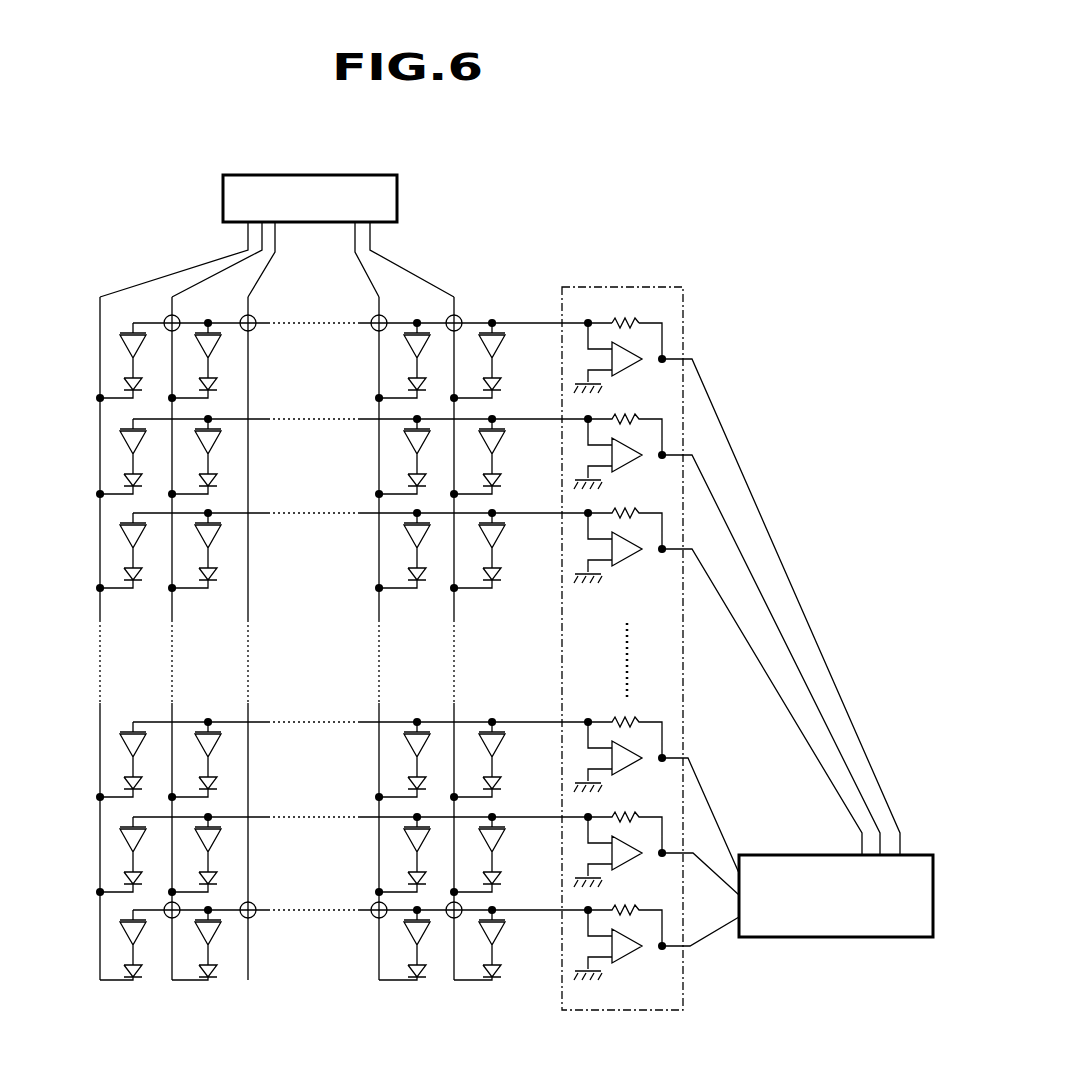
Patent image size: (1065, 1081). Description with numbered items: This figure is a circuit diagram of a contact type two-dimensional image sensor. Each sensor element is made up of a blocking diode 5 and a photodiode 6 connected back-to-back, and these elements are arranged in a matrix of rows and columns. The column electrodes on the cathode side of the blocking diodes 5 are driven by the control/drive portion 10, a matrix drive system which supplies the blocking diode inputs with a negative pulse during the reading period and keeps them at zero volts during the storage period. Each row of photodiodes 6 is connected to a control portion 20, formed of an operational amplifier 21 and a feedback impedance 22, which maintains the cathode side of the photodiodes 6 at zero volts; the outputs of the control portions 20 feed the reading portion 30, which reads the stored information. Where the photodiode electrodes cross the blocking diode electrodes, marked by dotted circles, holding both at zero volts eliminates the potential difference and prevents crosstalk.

The control/drive portion 10 is at (344, 184).
The blocking diode 5 is at (125, 385).
The photodiode 6 is at (125, 352).
The control portion 20 is at (677, 977).
The operational amplifier 21 is at (632, 350).
The feedback impedance 22 is at (628, 320).
The reading portion 30 is at (859, 928).